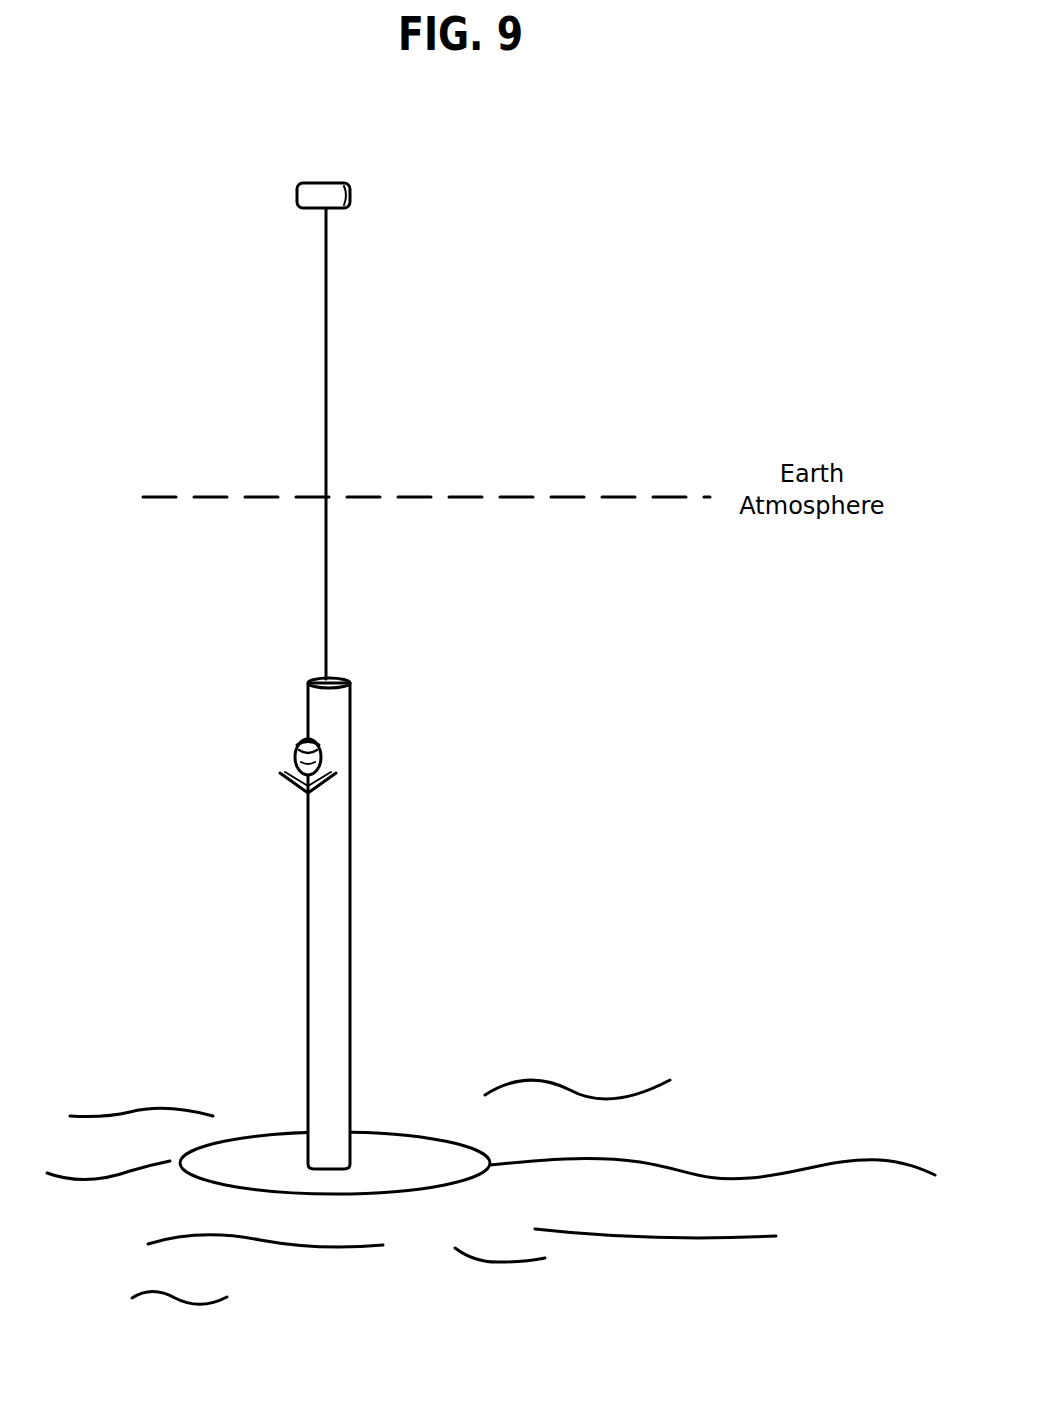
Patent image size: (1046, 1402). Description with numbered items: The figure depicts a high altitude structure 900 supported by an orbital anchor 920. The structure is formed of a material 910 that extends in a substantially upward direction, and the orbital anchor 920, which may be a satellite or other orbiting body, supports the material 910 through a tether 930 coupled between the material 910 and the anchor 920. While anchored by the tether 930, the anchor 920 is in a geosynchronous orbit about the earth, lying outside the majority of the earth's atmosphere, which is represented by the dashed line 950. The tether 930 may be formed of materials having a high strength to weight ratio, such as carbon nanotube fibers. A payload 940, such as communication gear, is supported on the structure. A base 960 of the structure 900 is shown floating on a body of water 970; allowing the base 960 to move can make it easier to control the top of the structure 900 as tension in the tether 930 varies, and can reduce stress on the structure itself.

The high altitude structure 900 is at (653, 752).
The material 910 is at (338, 817).
The orbital anchor 920 is at (330, 184).
The tether 930 is at (327, 375).
The payload 940 is at (298, 770).
The line 950 is at (486, 497).
The base 960 is at (403, 1150).
The body of water 970 is at (592, 1168).